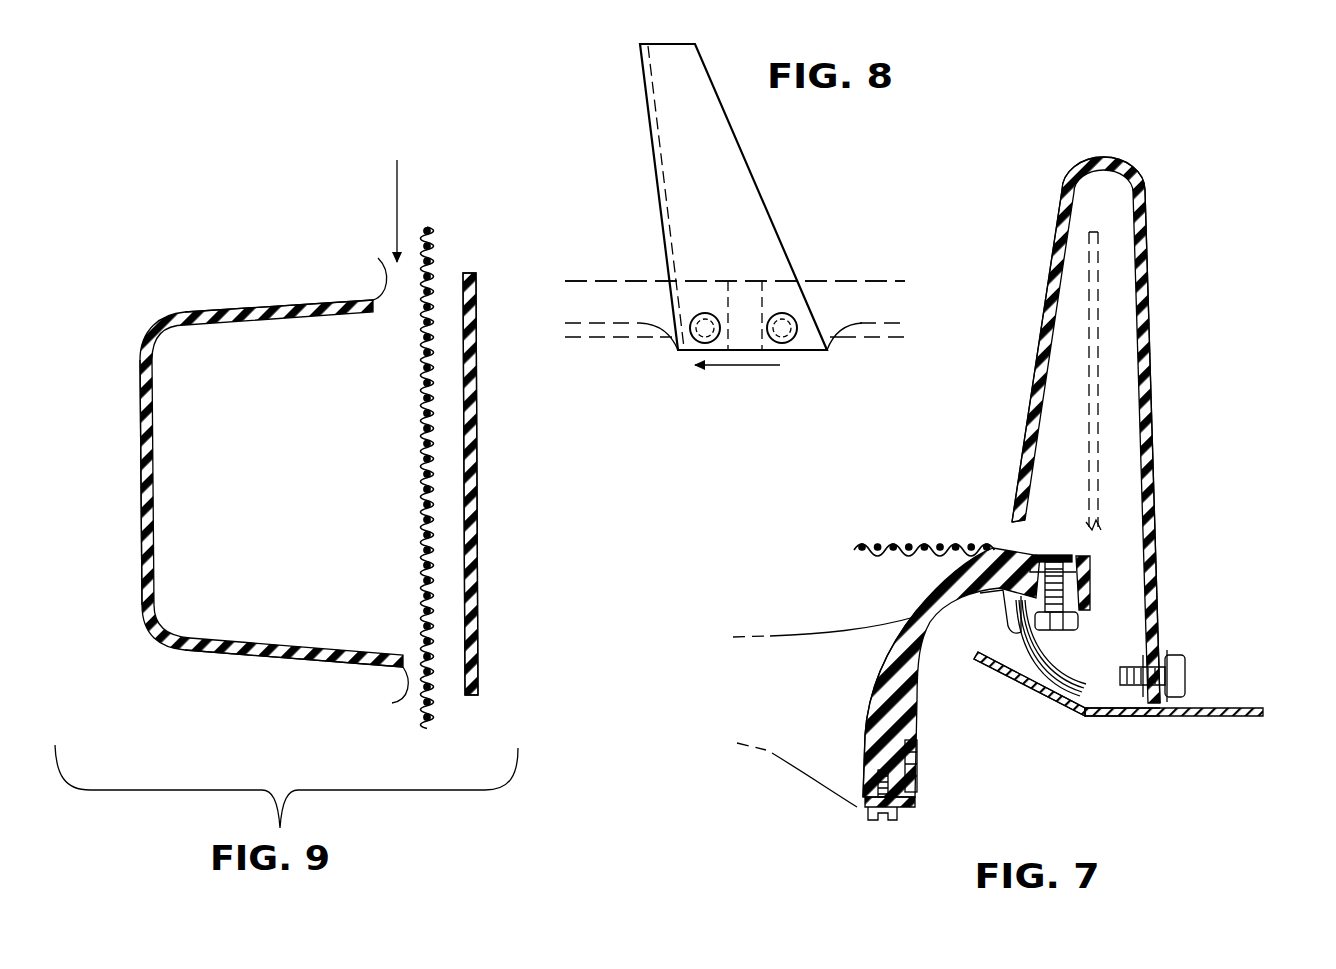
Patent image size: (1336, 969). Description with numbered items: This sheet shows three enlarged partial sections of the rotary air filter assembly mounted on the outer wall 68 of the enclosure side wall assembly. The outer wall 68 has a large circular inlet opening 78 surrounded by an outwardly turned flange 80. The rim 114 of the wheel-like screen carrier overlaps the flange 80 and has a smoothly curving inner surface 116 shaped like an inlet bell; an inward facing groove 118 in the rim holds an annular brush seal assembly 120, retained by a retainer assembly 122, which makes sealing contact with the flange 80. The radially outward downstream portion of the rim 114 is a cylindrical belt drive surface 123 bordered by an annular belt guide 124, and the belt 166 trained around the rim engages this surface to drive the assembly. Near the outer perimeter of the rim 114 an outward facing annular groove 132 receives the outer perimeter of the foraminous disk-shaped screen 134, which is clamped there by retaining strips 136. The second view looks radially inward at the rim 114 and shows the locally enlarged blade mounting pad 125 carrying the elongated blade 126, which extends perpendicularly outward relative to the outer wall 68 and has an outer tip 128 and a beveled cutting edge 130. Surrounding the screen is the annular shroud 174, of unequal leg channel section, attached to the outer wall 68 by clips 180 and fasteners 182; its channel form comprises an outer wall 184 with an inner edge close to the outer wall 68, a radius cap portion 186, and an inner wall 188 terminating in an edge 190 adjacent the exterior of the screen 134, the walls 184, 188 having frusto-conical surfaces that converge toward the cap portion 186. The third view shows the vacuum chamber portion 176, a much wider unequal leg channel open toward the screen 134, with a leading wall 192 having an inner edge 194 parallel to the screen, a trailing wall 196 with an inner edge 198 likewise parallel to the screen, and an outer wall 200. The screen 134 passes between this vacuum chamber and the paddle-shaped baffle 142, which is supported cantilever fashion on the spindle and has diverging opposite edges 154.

In FIG. 7, the outer wall 68 is at (1218, 706).
In FIG. 7, the inlet opening 78 is at (977, 654).
In FIG. 7, the flange 80 is at (1036, 692).
In FIG. 8, the rim 114 is at (822, 262).
In FIG. 7, the rim 114 is at (903, 589).
In FIG. 7, the inner surface 116 is at (872, 700).
In FIG. 7, the groove 118 is at (981, 615).
In FIG. 7, the brush seal assembly 120 is at (1050, 663).
In FIG. 7, the retainer assembly 122 is at (1078, 623).
In FIG. 7, the belt drive surface 123 is at (913, 728).
In FIG. 7, the belt guide 124 is at (910, 808).
In FIG. 8, the blade mounting pad 125 is at (842, 326).
In FIG. 8, the blade 126 is at (778, 174).
In FIG. 7, the blade 126 is at (1089, 280).
In FIG. 8, the outer tip 128 is at (662, 44).
In FIG. 8, the cutting edge 130 is at (654, 167).
In FIG. 7, the annular groove 132 is at (1086, 569).
In FIG. 9, the screen 134 is at (434, 256).
In FIG. 7, the screen 134 is at (922, 541).
In FIG. 7, the retaining strips 136 is at (1042, 551).
In FIG. 9, the baffle 142 is at (487, 489).
In FIG. 9, the diverging opposite edges 154 is at (474, 272).
In FIG. 7, the belt 166 is at (917, 758).
In FIG. 7, the annular shroud 174 is at (1162, 206).
In FIG. 9, the vacuum chamber portion 176 is at (146, 318).
In FIG. 7, the clips 180 is at (1119, 717).
In FIG. 7, the fasteners 182 is at (1180, 676).
In FIG. 7, the outer wall of shroud 184 is at (1153, 387).
In FIG. 7, the cap portion 186 is at (1105, 158).
In FIG. 7, the inner wall of shroud 188 is at (1040, 342).
In FIG. 7, the edge 190 is at (1012, 527).
In FIG. 9, the leading wall 192 is at (247, 309).
In FIG. 9, the inner edge of leading wall 194 is at (359, 273).
In FIG. 9, the trailing wall 196 is at (243, 656).
In FIG. 9, the inner edge of trailing wall 198 is at (378, 691).
In FIG. 9, the outer wall of vacuum chamber 200 is at (140, 483).